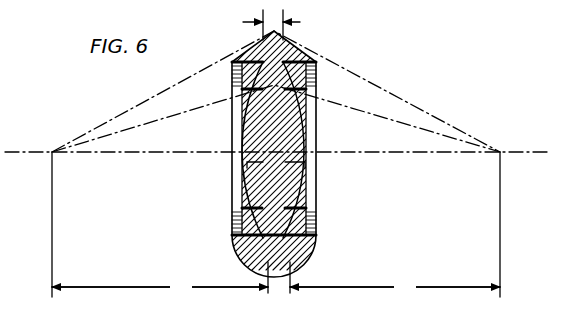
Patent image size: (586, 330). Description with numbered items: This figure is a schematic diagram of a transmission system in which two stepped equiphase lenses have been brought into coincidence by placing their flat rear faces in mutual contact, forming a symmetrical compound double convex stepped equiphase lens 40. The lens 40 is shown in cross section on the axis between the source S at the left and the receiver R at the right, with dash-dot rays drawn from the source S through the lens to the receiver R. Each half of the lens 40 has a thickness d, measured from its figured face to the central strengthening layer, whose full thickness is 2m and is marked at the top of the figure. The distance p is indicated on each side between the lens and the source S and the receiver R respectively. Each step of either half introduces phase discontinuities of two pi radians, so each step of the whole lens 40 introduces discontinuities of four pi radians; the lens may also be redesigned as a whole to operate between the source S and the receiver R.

The symmetrical compound double convex stepped equiphase lens 40 is at (308, 174).
The thickness of each half of the lens d is at (247, 169).
The distance from lens to source/receiver p is at (276, 286).
The full thickness of the strengthening layer 2m is at (287, 25).
The source S is at (41, 214).
The receiver R is at (509, 212).